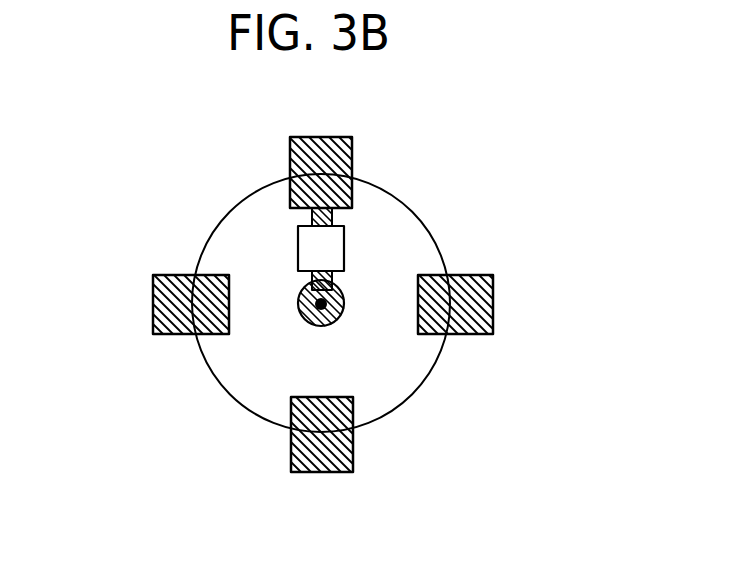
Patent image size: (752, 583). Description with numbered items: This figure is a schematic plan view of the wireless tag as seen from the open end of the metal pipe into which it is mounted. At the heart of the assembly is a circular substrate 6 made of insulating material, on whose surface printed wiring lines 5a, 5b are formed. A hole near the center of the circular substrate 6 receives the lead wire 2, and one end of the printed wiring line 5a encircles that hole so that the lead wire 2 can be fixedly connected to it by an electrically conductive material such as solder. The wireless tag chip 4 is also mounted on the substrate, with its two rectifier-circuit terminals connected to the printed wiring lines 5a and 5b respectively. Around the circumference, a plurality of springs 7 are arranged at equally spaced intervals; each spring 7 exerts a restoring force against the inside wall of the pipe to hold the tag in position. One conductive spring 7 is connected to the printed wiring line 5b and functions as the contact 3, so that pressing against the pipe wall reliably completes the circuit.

The lead wire 2 is at (299, 301).
The contact 3 is at (353, 148).
The wireless tag chip 4 is at (303, 239).
The printed wiring line 5a is at (333, 289).
The printed wiring line 5b is at (334, 216).
The circular substrate 6 is at (407, 379).
The springs 7 is at (324, 334).